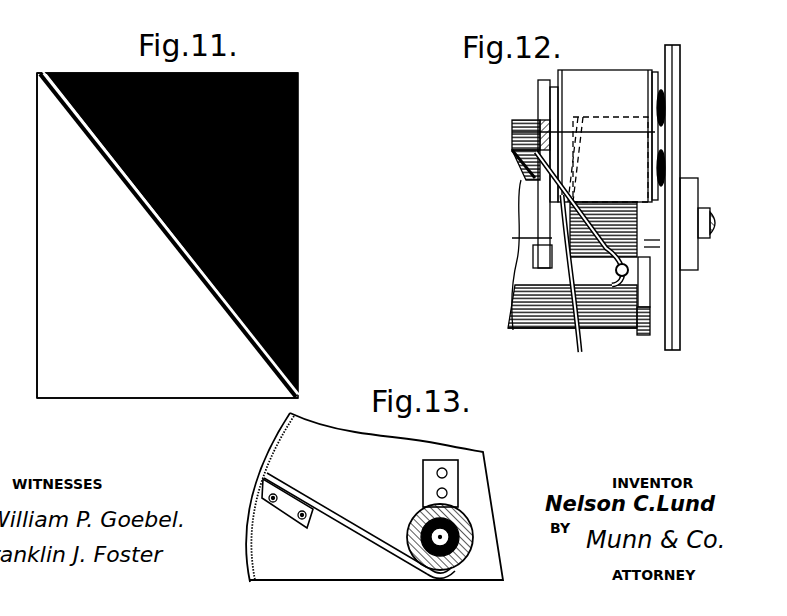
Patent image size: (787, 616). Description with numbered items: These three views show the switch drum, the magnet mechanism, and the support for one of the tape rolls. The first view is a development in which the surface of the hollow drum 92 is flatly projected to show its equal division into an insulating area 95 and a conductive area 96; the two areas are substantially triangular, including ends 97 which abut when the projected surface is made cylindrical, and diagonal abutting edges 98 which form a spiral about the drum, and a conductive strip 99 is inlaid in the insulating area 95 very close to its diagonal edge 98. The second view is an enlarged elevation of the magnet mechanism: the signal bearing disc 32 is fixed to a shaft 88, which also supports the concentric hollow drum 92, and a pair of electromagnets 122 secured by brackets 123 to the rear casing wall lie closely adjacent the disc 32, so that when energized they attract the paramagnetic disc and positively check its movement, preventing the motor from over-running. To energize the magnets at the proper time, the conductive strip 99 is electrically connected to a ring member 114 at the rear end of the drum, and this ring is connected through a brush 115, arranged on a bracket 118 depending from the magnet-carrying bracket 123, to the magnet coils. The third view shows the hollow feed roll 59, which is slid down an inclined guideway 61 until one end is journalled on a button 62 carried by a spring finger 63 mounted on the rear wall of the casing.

In FIG. 11, the insulating area 95 is at (261, 72).
In FIG. 11, the conductive area 96 is at (100, 399).
In FIG. 12, the conductive area 96 is at (514, 208).
In FIG. 11, the ends 97 is at (92, 72).
In FIG. 11, the diagonal abutting edges 98 is at (171, 250).
In FIG. 11, the conductive strip 99 is at (206, 283).
In FIG. 12, the signal bearing disc 32 is at (681, 137).
In FIG. 12, the shaft 88 is at (709, 210).
In FIG. 12, the hollow drum 92 is at (537, 328).
In FIG. 12, the ring member 114 is at (639, 337).
In FIG. 12, the brush 115 is at (651, 297).
In FIG. 12, the bracket 118 is at (512, 238).
In FIG. 12, the electromagnets 122 is at (622, 61).
In FIG. 12, the brackets 123 is at (521, 118).
In FIG. 13, the feed roll 59 is at (465, 518).
In FIG. 13, the inclined guideways 61 is at (348, 524).
In FIG. 13, the button 62 is at (410, 553).
In FIG. 13, the spring finger 63 is at (459, 480).